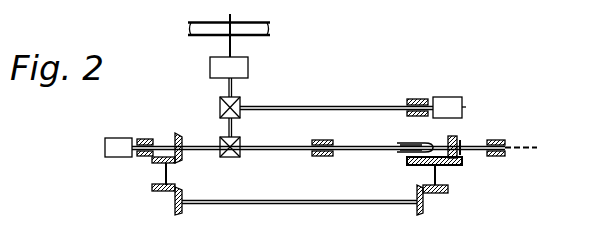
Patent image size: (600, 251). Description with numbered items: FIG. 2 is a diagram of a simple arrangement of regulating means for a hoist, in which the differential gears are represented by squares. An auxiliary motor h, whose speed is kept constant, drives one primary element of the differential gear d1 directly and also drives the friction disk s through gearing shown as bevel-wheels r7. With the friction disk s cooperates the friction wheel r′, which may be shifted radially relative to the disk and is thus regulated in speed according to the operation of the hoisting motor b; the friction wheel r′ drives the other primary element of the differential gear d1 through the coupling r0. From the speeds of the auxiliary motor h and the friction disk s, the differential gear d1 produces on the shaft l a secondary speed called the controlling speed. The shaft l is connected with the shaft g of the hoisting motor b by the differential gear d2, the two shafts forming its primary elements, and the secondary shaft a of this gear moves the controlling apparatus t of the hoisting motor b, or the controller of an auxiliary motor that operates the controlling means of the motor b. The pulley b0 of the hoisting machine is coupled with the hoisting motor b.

The pulley b0 is at (270, 29).
The hoisting motor b is at (248, 67).
The shaft of the hoisting motor g is at (228, 88).
The differential gear d2 is at (240, 102).
The secondary shaft a is at (365, 100).
The controlling apparatus t is at (452, 103).
The shaft l is at (228, 130).
The differential gear d1 is at (241, 157).
The auxiliary motor h is at (122, 158).
The bevel-wheels r7 is at (182, 152).
The friction disk s is at (448, 166).
The coupling r0 is at (396, 151).
The friction wheel r′ is at (455, 140).